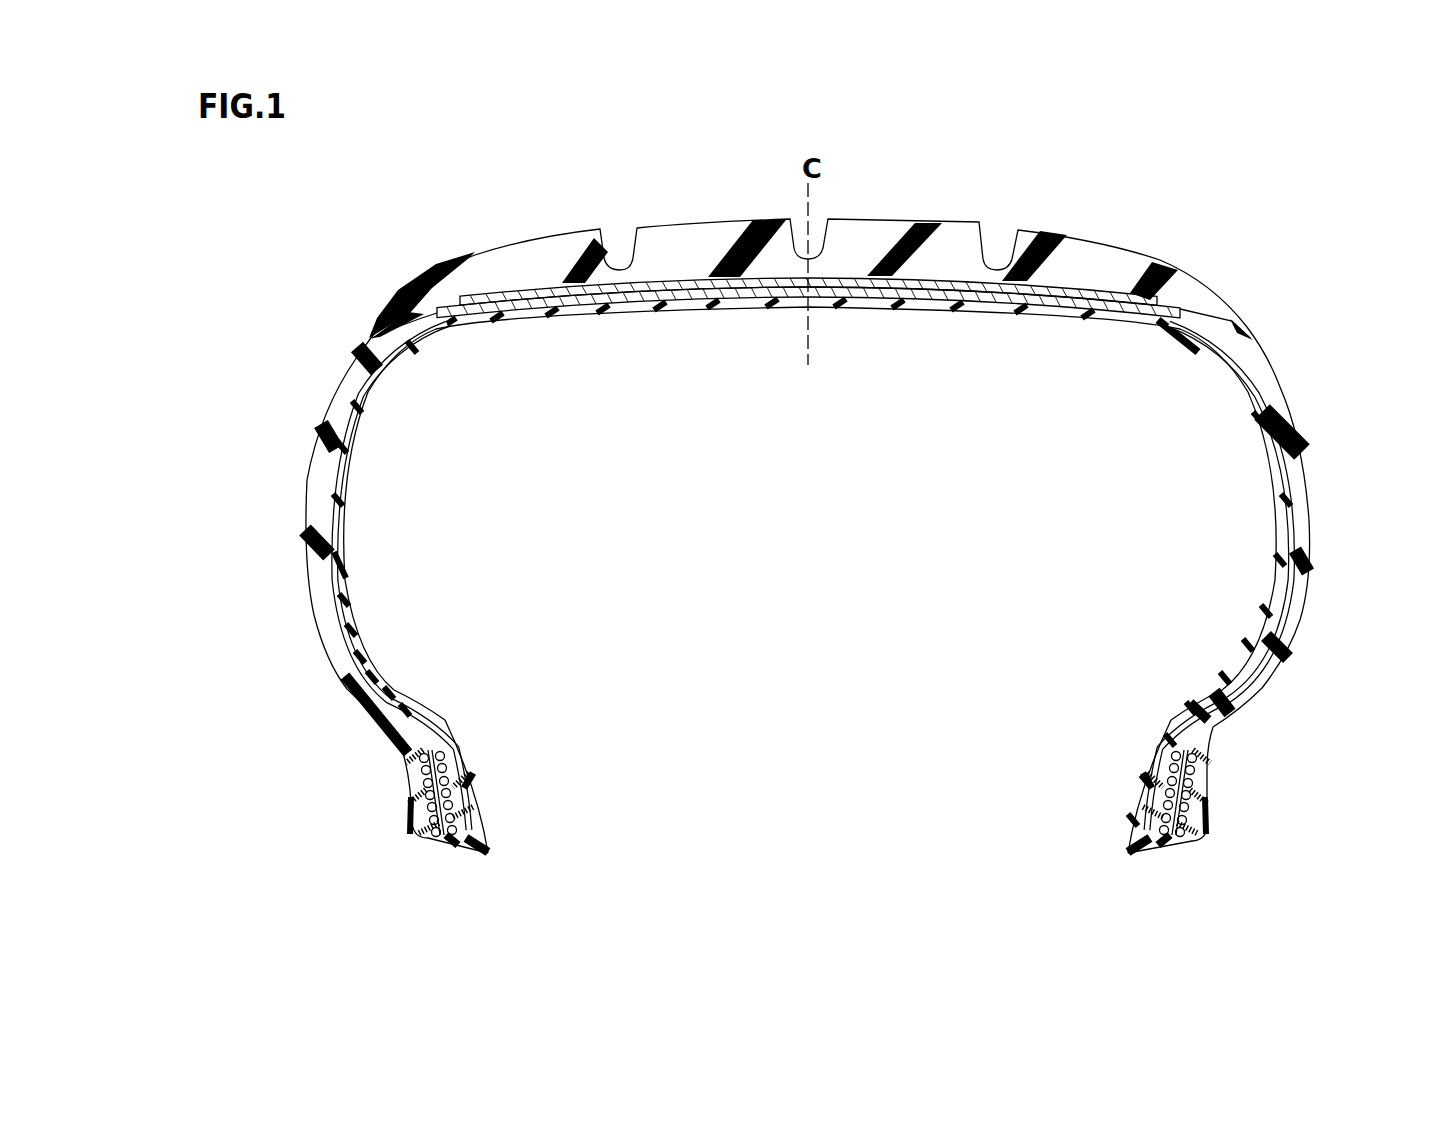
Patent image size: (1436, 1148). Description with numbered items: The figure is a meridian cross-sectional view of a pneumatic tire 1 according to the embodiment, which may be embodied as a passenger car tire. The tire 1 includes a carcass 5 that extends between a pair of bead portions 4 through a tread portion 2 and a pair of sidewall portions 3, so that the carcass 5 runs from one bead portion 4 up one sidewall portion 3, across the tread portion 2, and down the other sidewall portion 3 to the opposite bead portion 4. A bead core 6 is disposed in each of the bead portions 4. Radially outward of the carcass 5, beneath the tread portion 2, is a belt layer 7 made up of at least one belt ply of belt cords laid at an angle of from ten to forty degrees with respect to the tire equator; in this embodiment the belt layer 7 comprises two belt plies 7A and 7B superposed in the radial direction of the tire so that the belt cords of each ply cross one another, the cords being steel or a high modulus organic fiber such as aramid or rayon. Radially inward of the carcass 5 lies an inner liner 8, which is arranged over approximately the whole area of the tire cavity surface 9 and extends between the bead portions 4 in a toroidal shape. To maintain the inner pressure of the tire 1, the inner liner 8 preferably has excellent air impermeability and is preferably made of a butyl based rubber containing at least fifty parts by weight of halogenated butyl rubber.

The pneumatic tire 1 is at (1242, 215).
The tread portion 2 is at (871, 214).
The sidewall portion 3 is at (293, 485).
The bead portion 4 is at (394, 788).
The carcass 5 is at (355, 402).
The bead core 6 is at (409, 729).
The belt layer 7 is at (468, 192).
The belt ply 7A is at (510, 297).
The belt ply 7B is at (545, 290).
The inner liner 8 is at (1003, 303).
The tire cavity surface 9 is at (1133, 323).